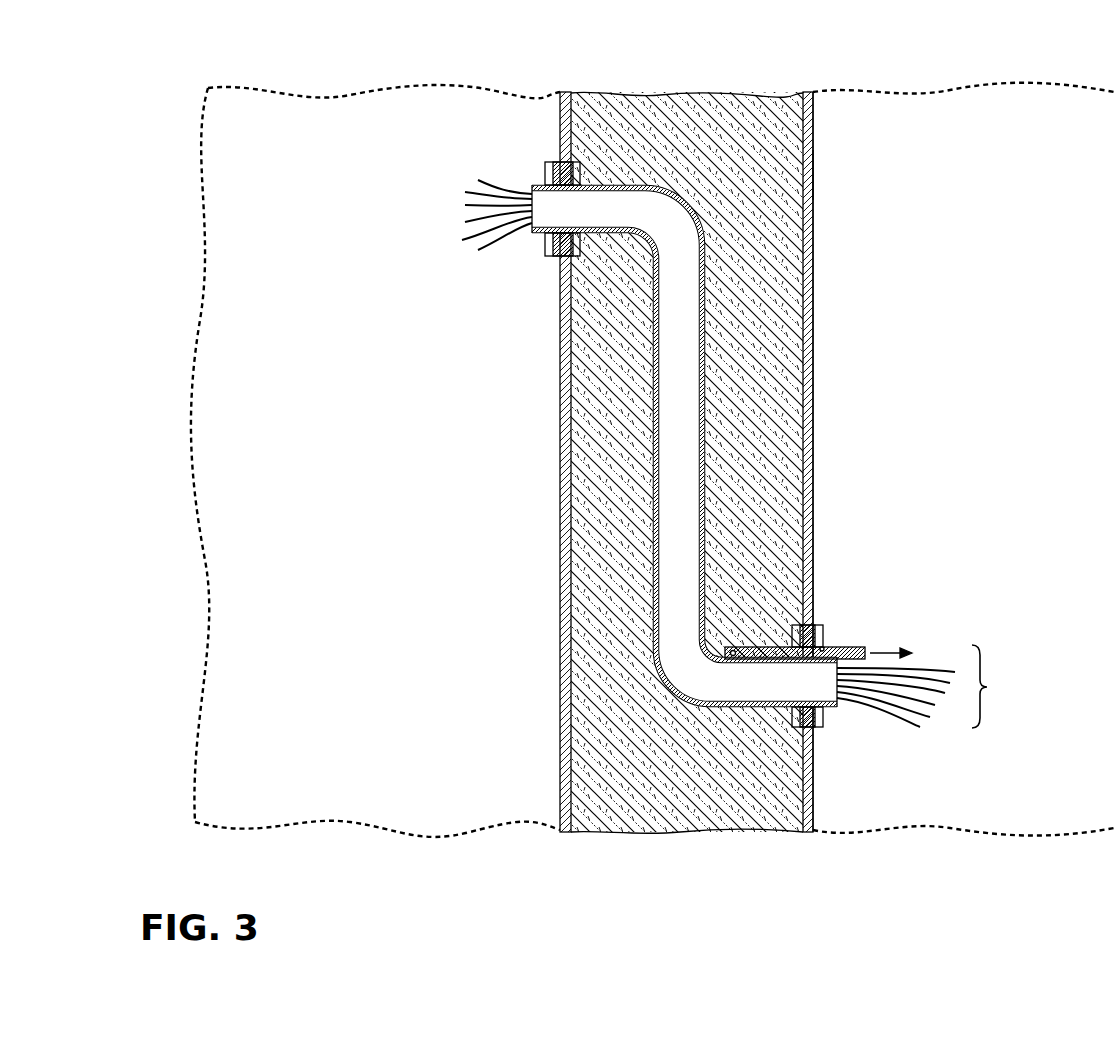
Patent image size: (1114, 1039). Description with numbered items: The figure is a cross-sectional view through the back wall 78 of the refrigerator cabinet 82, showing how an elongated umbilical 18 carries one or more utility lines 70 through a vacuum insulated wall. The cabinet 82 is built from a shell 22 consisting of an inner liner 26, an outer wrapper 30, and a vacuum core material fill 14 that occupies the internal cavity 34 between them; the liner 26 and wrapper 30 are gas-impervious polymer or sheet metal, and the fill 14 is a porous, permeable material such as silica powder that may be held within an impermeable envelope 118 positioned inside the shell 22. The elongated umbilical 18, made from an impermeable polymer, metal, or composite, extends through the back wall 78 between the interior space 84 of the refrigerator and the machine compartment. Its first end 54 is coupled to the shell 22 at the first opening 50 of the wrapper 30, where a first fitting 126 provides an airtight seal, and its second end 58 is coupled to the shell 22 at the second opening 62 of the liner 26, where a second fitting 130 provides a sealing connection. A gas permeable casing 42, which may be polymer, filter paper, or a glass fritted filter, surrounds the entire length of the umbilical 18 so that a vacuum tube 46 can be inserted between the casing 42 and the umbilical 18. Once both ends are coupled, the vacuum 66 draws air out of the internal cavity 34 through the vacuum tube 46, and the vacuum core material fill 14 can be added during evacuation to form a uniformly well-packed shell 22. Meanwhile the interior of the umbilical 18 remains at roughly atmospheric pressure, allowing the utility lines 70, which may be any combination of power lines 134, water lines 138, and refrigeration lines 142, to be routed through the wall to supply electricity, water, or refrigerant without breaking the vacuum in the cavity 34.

The vacuum core material fill 14 is at (699, 427).
The elongated umbilical 18 is at (697, 411).
The shell 22 is at (628, 88).
The liner 26 is at (560, 425).
The outer wrapper 30 is at (815, 305).
The internal cavity 34 is at (690, 112).
The gas permeable casing 42 is at (692, 620).
The vacuum tube 46 is at (855, 646).
The first opening 50 is at (840, 708).
The first end 54 is at (840, 685).
The second end 58 is at (545, 182).
The second opening 62 is at (540, 255).
The vacuum 66 is at (906, 653).
The utility lines 70 is at (927, 700).
The back wall 78 is at (815, 117).
The cabinet 82 is at (818, 172).
The interior space 84 is at (458, 583).
The impermeable envelope 118 is at (698, 462).
The first fitting 126 is at (820, 727).
The second fitting 130 is at (518, 179).
The power lines 134 is at (492, 233).
The water lines 138 is at (488, 185).
The refrigeration lines 142 is at (480, 212).